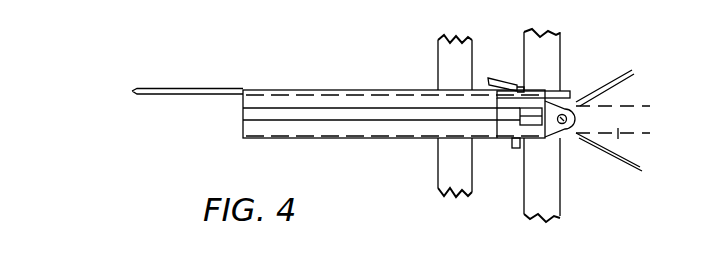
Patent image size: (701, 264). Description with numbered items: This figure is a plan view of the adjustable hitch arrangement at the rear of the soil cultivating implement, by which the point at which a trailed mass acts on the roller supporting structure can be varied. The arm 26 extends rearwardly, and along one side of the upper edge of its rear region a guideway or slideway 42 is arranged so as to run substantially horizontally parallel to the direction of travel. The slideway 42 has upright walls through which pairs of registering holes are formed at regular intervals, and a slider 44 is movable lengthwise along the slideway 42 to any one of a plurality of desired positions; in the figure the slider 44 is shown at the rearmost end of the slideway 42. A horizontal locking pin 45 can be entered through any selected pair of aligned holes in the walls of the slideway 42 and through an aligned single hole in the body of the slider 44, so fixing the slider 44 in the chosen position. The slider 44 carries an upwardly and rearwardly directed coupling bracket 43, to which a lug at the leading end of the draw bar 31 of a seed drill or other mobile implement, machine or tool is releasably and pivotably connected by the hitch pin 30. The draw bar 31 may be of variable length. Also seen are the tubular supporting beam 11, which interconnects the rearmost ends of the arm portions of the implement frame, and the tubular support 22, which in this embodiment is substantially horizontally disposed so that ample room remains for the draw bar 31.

The tubular supporting beam 11 is at (442, 52).
The tubular support 22 is at (552, 53).
The arm 26 is at (199, 88).
The hitch pin 30 is at (566, 130).
The draw bar 31 is at (618, 140).
The slideway 42 is at (364, 139).
The coupling bracket 43 is at (578, 100).
The slider 44 is at (506, 125).
The locking pin 45 is at (508, 69).